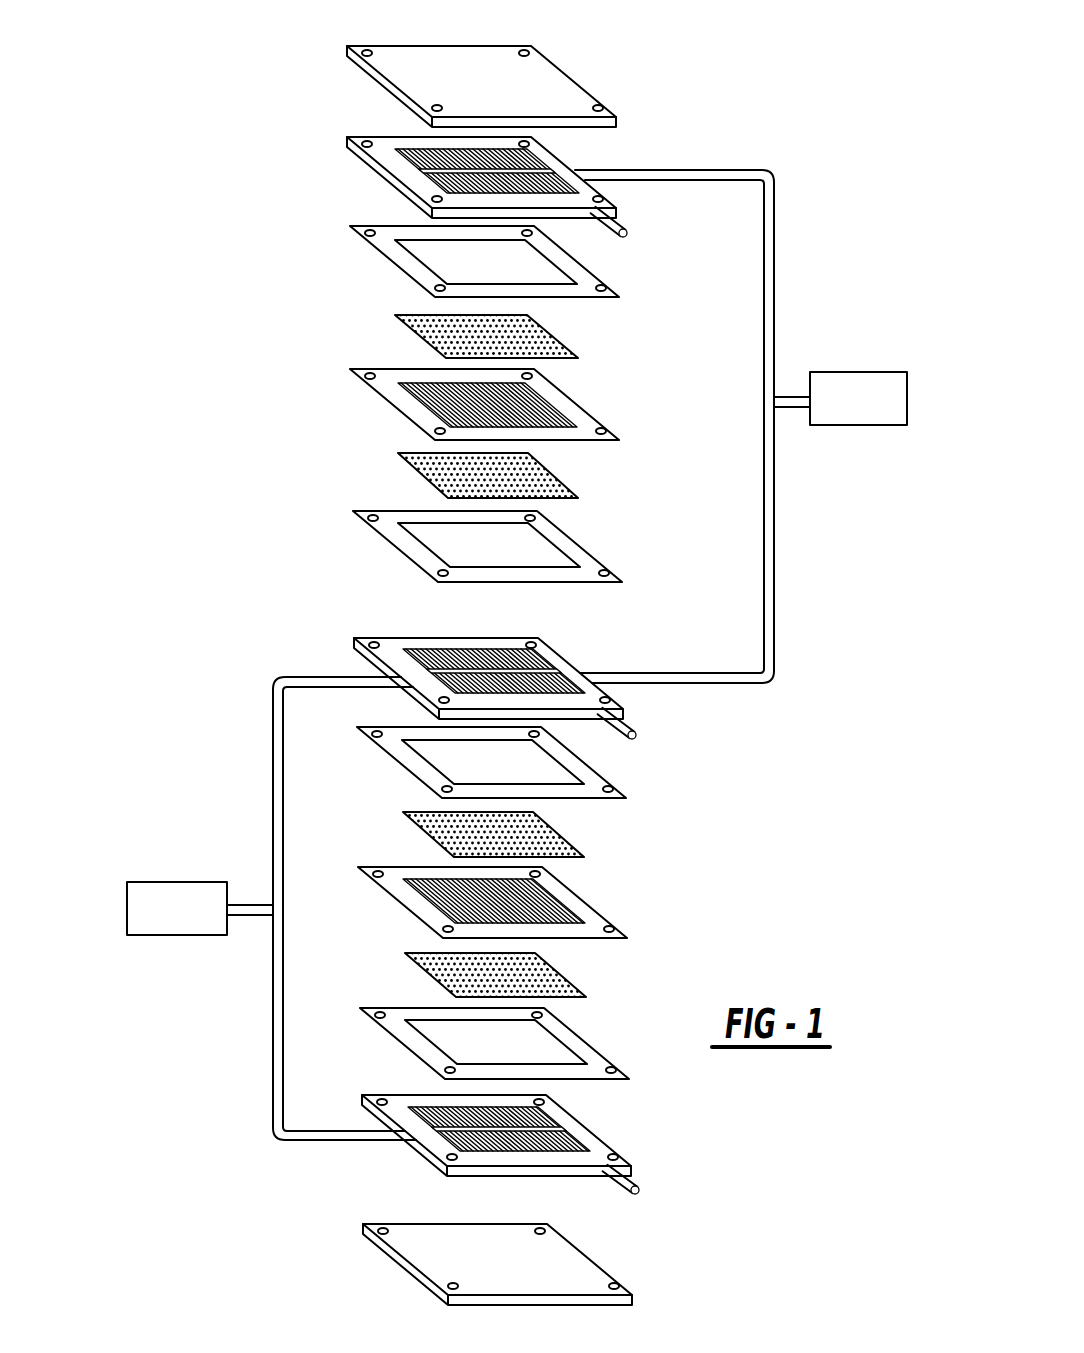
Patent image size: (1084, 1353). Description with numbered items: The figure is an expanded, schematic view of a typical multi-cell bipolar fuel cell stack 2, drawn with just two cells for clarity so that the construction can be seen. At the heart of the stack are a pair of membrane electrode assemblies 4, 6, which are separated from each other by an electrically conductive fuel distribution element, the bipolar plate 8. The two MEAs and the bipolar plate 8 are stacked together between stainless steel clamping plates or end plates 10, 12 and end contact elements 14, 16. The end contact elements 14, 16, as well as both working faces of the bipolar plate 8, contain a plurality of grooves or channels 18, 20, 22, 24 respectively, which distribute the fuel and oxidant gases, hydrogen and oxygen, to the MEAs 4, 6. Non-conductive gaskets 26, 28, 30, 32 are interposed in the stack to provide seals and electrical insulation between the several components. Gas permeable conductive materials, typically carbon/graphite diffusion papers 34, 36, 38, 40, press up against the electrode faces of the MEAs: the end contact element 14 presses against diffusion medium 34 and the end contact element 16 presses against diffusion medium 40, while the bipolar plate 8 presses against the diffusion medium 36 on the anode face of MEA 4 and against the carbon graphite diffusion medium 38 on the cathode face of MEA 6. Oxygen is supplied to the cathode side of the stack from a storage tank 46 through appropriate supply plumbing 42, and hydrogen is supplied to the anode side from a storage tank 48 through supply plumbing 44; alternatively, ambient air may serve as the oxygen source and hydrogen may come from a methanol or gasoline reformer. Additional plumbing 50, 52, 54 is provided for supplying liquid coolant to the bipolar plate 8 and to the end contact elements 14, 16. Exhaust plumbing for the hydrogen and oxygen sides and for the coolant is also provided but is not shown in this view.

The bipolar fuel cell stack 2 is at (801, 130).
The membrane electrode assembly 4 is at (390, 404).
The membrane electrode assembly 6 is at (605, 906).
The bipolar plate 8 is at (472, 692).
The end plate 10 is at (384, 95).
The end plate 12 is at (590, 1252).
The end contact element 14 is at (465, 155).
The end contact element 16 is at (528, 1122).
The channels 18 is at (507, 173).
The channels 20 is at (400, 646).
The channels 22 is at (575, 720).
The channels 24 is at (552, 1128).
The gasket 26 is at (388, 260).
The gasket 28 is at (398, 546).
The gasket 30 is at (580, 802).
The gasket 32 is at (594, 1048).
The carbon/graphite diffusion paper 34 is at (428, 338).
The carbon/graphite diffusion paper 36 is at (425, 475).
The carbon/graphite diffusion paper 38 is at (570, 833).
The carbon/graphite diffusion paper 40 is at (565, 977).
The supply plumbing 42 is at (777, 548).
The supply plumbing 44 is at (273, 801).
The storage tank 46 is at (878, 372).
The storage tank 48 is at (175, 882).
The plumbing 50 is at (622, 221).
The plumbing 52 is at (628, 723).
The plumbing 54 is at (632, 1178).